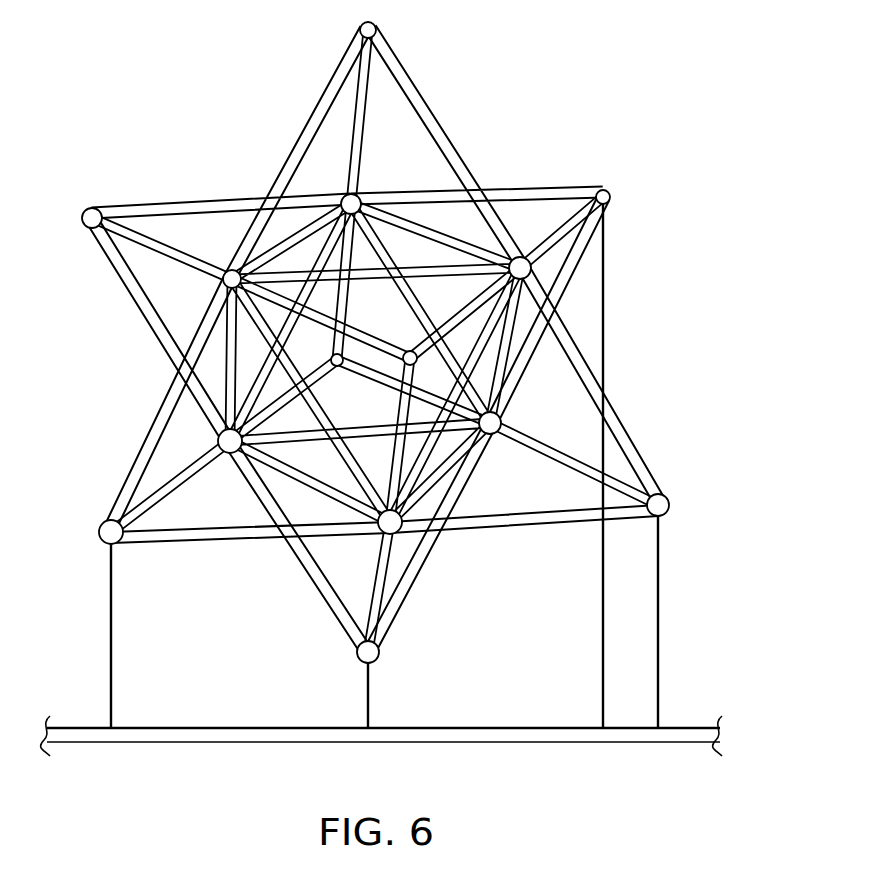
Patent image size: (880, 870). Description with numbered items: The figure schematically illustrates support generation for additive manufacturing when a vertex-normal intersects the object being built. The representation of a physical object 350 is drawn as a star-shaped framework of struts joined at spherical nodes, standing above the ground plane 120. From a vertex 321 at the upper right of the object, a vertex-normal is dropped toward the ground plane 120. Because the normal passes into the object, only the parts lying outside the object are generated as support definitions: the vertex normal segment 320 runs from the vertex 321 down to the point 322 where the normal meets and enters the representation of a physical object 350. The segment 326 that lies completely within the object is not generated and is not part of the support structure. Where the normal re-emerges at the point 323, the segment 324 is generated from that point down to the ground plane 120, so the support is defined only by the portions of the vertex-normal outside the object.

The representation of a physical object 350 is at (375, 342).
The vertex 321 is at (604, 190).
The vertex normal segment 320 is at (604, 285).
The point 322 is at (604, 395).
The segment 326 is at (603, 432).
The point 323 is at (603, 520).
The segment 324 is at (603, 652).
The ground plane 120 is at (687, 727).